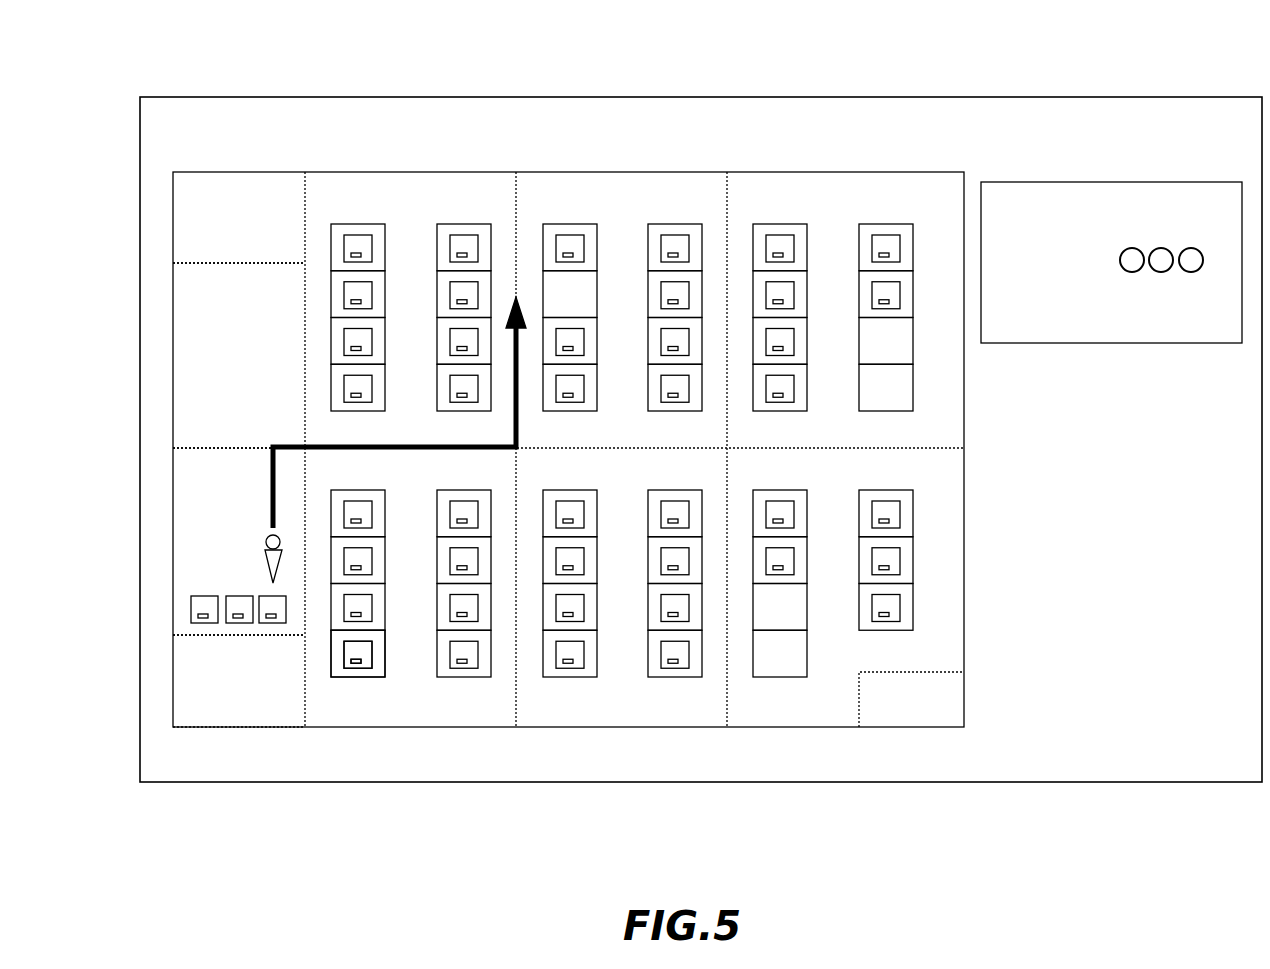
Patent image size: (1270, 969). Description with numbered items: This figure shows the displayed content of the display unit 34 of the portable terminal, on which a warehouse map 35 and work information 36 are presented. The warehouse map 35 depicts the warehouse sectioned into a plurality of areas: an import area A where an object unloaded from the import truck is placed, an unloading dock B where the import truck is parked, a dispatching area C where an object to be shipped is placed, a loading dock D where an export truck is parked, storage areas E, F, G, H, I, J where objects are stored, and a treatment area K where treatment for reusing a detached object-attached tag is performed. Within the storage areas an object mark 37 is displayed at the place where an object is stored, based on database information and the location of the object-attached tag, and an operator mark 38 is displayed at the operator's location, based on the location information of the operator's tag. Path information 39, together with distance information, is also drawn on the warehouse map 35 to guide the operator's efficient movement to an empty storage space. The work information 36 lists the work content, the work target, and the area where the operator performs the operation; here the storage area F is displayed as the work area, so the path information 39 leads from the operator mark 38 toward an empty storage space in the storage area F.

The display unit 34 is at (202, 96).
The warehouse map 35 is at (322, 172).
The work information 36 is at (1056, 182).
The object mark 37 is at (365, 668).
The operator mark 38 is at (267, 558).
The path information 39 is at (271, 475).
The import area A is at (197, 538).
The unloading dock B is at (215, 700).
The dispatching area C is at (197, 325).
The loading dock D is at (253, 196).
The storage area E is at (481, 196).
The storage area F is at (656, 198).
The storage area G is at (851, 198).
The storage area H is at (442, 700).
The storage area I is at (620, 700).
The storage area J is at (812, 703).
The treatment area K is at (917, 703).